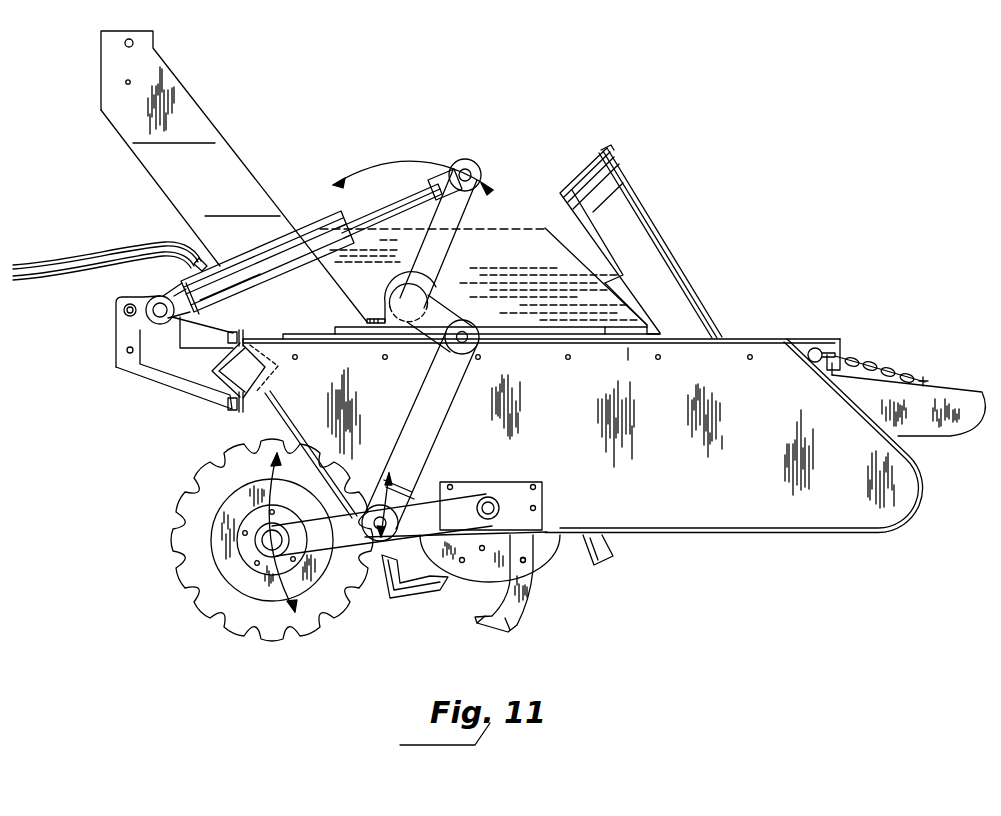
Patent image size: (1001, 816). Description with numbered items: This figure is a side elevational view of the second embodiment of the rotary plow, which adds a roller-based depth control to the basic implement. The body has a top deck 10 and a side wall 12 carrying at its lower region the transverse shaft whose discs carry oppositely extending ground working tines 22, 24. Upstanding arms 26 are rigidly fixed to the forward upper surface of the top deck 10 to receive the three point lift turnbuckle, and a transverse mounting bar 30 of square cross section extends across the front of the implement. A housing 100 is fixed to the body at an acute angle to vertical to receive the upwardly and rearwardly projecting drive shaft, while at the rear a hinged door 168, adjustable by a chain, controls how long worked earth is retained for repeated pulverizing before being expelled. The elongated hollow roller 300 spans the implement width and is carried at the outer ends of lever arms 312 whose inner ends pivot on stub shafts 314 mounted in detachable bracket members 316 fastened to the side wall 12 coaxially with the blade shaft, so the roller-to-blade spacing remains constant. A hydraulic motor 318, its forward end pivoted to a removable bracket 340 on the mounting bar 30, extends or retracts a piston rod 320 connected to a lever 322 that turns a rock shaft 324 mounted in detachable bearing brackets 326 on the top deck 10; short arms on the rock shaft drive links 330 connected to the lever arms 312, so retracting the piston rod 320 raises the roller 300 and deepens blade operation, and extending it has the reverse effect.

The top deck 10 is at (304, 334).
The side wall 12 is at (772, 532).
The ground working teeth or tines 22 is at (410, 572).
The ground working teeth or tines 24 is at (505, 630).
The upstanding arms 26 is at (197, 121).
The mounting bar 30 is at (263, 386).
The housing 100 is at (688, 314).
The hinged door 168 is at (942, 396).
The roller 300 is at (197, 562).
The lever arm 312 is at (342, 510).
The stub shaft 314 is at (488, 500).
The bracket member 316 is at (541, 488).
The hydraulic motor 318 is at (265, 247).
The piston rod 320 is at (393, 203).
The lever 322 is at (448, 256).
The rock shaft 324 is at (402, 297).
The bearing bracket 326 is at (432, 294).
The link 330 is at (423, 403).
The removable bracket 340 is at (159, 366).